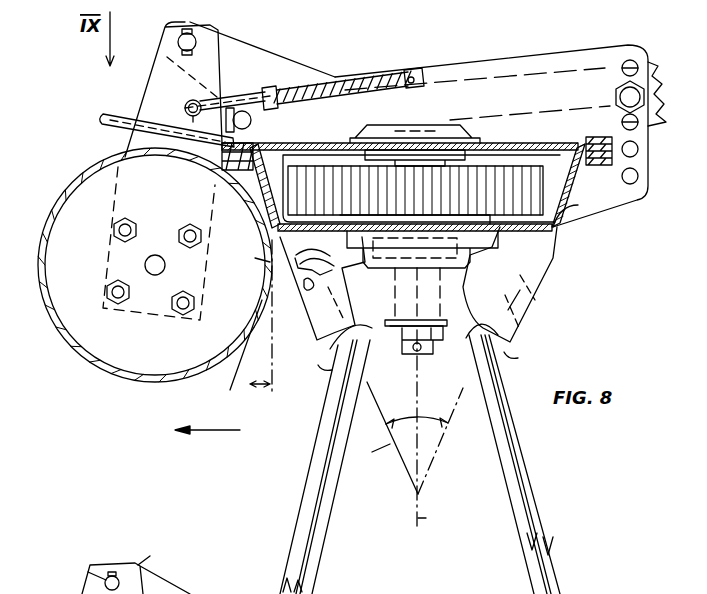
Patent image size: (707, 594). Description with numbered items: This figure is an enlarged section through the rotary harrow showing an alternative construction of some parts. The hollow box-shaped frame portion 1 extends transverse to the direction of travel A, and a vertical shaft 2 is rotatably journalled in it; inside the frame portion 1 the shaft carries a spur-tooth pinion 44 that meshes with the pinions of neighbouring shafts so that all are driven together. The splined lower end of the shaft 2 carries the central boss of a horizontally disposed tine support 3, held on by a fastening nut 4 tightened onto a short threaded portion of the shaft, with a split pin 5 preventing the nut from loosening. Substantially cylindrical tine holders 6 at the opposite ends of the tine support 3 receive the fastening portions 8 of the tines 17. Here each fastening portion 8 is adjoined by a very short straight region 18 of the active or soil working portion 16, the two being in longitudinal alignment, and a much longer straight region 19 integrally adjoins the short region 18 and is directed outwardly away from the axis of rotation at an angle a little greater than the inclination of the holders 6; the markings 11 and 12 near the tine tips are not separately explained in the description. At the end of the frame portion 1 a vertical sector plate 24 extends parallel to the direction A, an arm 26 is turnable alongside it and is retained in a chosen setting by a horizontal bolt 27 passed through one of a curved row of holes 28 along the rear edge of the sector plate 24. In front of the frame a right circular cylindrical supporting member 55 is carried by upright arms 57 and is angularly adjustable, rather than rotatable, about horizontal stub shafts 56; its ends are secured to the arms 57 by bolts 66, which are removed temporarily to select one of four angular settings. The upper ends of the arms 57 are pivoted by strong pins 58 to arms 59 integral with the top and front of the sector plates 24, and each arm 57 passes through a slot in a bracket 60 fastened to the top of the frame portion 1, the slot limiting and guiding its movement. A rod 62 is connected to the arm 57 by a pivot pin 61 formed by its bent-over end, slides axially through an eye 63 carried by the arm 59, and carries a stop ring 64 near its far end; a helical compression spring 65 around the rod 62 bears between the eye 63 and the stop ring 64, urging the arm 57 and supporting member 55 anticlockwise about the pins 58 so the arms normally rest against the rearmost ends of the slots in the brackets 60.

The hollow frame portion 1 is at (570, 196).
The shaft 2 is at (418, 135).
The tine support 3 is at (378, 335).
The fastening nut 4 is at (442, 345).
The split pin 5 is at (412, 360).
The tine holder 6 is at (314, 330).
The fastening portion 8 is at (314, 277).
The tube end 11 is at (538, 582).
The tube end 12 is at (306, 592).
The active or soil working portion 16 is at (322, 452).
The tine 17 is at (298, 498).
The short straight region 18 is at (325, 369).
The longer straight region 19 is at (524, 436).
The sector plate 24 is at (518, 62).
The arm 26 is at (656, 122).
The horizontal bolt 27 is at (614, 100).
The holes 28 is at (634, 184).
The spur-tooth pinion 44 is at (570, 222).
The supporting member 55 is at (76, 360).
The stub shaft 56 is at (146, 266).
The upright arm 57 is at (152, 90).
The pivot pin 58 is at (178, 40).
The arm 59 is at (240, 48).
The bracket 60 is at (100, 118).
The pivot pin 61 is at (185, 108).
The rod 62 is at (245, 110).
The eye 63 is at (276, 108).
The stop ring 64 is at (418, 70).
The helical compression spring 65 is at (355, 80).
The bolt 66 is at (190, 228).